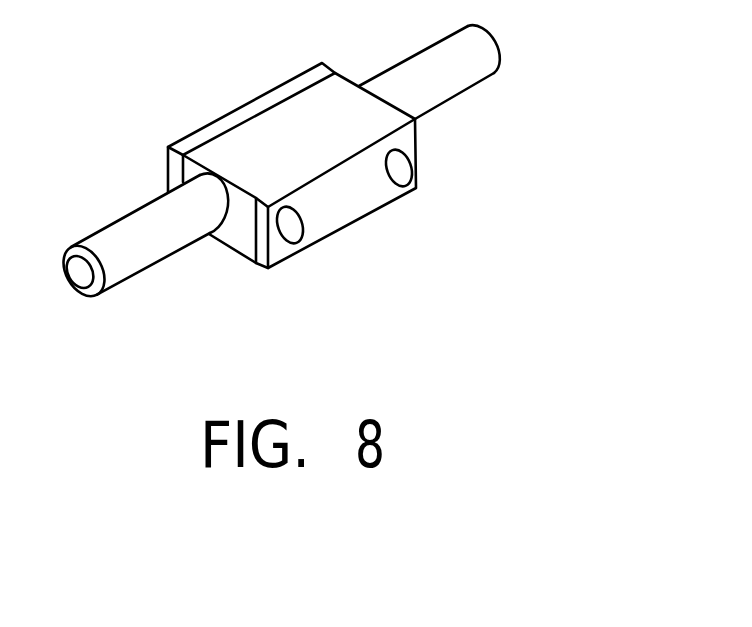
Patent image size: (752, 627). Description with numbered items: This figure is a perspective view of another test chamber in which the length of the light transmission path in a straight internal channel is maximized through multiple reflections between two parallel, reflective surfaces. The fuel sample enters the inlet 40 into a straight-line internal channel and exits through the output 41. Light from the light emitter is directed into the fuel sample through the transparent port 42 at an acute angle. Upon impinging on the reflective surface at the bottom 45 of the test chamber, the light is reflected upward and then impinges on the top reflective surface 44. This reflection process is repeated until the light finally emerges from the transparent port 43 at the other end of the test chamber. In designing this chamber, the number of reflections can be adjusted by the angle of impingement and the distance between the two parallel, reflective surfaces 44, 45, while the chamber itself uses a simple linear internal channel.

The inlet 40 is at (76, 279).
The output 41 is at (512, 55).
The transparent port 42 is at (293, 229).
The transparent port 43 is at (402, 168).
The top reflective surface 44 is at (365, 145).
The bottom reflective surface 45 is at (213, 130).